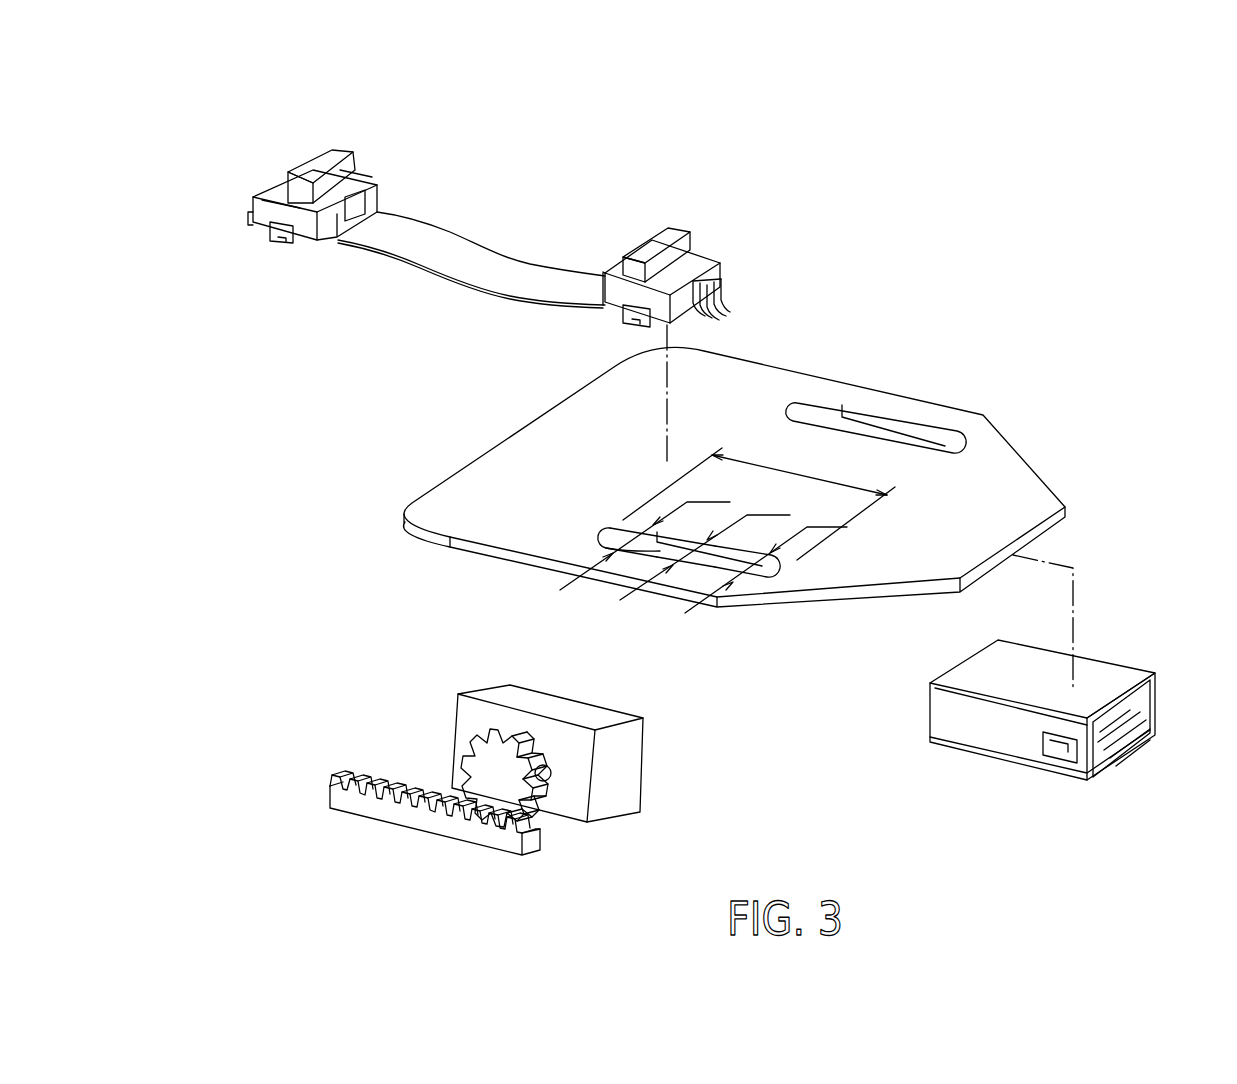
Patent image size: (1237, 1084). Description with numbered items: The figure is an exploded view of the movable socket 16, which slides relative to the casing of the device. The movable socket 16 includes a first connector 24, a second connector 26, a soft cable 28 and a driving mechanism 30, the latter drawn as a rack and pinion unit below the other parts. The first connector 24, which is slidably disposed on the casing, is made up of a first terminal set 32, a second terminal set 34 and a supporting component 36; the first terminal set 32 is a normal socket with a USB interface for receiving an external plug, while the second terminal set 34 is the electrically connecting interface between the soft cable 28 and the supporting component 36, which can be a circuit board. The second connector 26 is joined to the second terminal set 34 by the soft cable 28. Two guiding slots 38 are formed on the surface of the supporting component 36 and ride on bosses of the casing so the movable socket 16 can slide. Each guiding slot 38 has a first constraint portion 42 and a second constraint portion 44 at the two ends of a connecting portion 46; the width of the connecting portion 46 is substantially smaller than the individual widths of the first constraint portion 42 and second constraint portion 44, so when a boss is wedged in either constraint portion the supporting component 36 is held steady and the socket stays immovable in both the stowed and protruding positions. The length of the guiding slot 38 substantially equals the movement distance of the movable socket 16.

The movable socket 16 is at (1107, 185).
The first connector 24 is at (1022, 237).
The second connector 26 is at (263, 217).
The soft cable 28 is at (437, 250).
The driving mechanism 30 is at (403, 718).
The first terminal set 32 is at (1100, 678).
The second terminal set 34 is at (703, 262).
The supporting component 36 is at (988, 458).
The guiding slot 38 is at (877, 427).
The first constraint portion 42 is at (733, 571).
The second constraint portion 44 is at (605, 558).
The connecting portion 46 is at (667, 561).